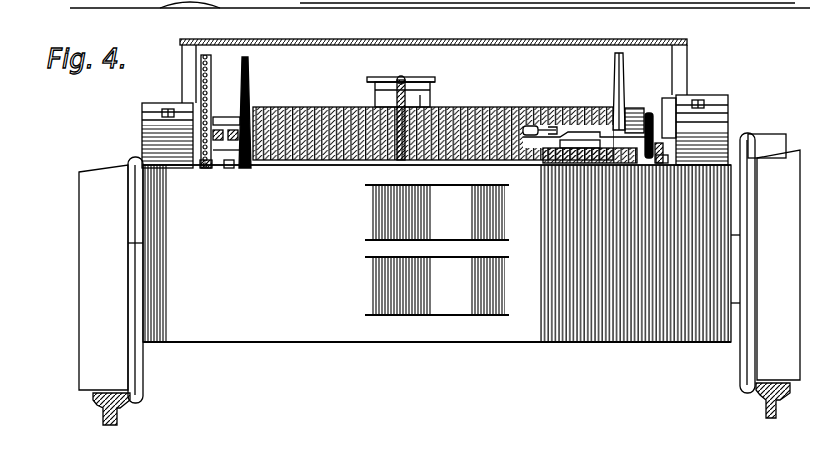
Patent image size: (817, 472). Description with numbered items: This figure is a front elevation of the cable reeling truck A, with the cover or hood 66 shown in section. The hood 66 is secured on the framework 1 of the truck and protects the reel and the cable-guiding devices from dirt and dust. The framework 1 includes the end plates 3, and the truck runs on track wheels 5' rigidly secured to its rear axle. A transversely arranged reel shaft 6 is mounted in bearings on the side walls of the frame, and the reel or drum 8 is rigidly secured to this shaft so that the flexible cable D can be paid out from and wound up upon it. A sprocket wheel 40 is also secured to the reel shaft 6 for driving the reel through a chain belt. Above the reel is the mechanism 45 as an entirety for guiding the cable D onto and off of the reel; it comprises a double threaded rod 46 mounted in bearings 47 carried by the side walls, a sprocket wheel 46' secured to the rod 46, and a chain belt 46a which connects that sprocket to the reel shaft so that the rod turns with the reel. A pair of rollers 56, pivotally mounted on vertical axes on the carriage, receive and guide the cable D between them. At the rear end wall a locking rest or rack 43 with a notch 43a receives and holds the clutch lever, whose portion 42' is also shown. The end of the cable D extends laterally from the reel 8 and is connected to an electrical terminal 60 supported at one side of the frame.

The cover or hood 66 is at (452, 40).
The bearings 47 is at (147, 103).
The sprocket wheel 46' is at (223, 105).
The double threaded rod 46 is at (226, 113).
The chain belt 46a is at (204, 170).
The reel or drum 8 is at (249, 88).
The cable guiding mechanism 45 is at (383, 80).
The pair of rollers 56 is at (379, 77).
The flexible cable D is at (468, 110).
The pawl 42' is at (582, 107).
The locking rest or rack 43 is at (592, 140).
The notch 43a is at (572, 134).
The sprocket wheel 40 is at (648, 112).
The reel shaft 6 is at (228, 168).
The electrical terminal 60 is at (766, 143).
The end plates 3 is at (437, 253).
The cable reeling truck A is at (437, 273).
The framework 1 is at (548, 364).
The track wheels 5' is at (439, 279).